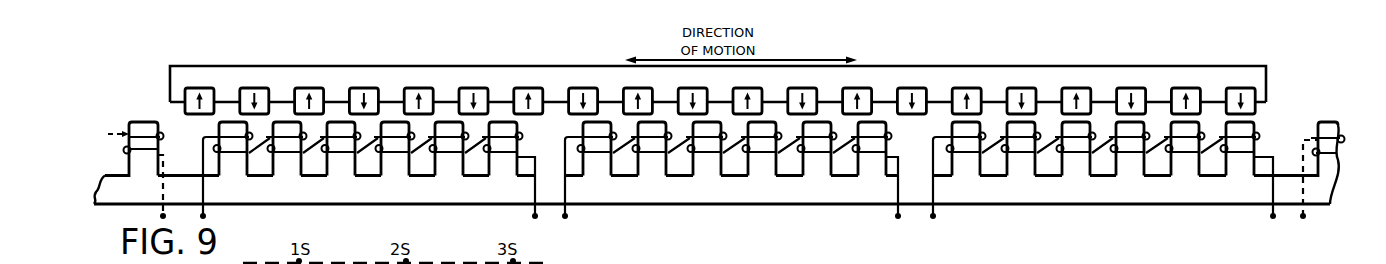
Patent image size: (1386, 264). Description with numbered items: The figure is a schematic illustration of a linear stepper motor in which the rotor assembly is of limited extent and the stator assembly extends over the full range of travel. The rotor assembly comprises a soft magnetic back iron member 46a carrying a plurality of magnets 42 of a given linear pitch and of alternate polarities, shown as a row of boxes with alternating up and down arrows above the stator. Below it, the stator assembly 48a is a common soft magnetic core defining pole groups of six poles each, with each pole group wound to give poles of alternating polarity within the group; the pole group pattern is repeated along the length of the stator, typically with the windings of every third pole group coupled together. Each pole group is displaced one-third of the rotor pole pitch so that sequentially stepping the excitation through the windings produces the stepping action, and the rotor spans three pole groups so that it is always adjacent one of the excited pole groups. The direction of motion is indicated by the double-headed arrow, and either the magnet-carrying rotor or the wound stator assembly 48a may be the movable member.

The magnets 42 is at (415, 87).
The soft magnetic back iron member 46a is at (492, 85).
The stator assembly 48a is at (708, 189).